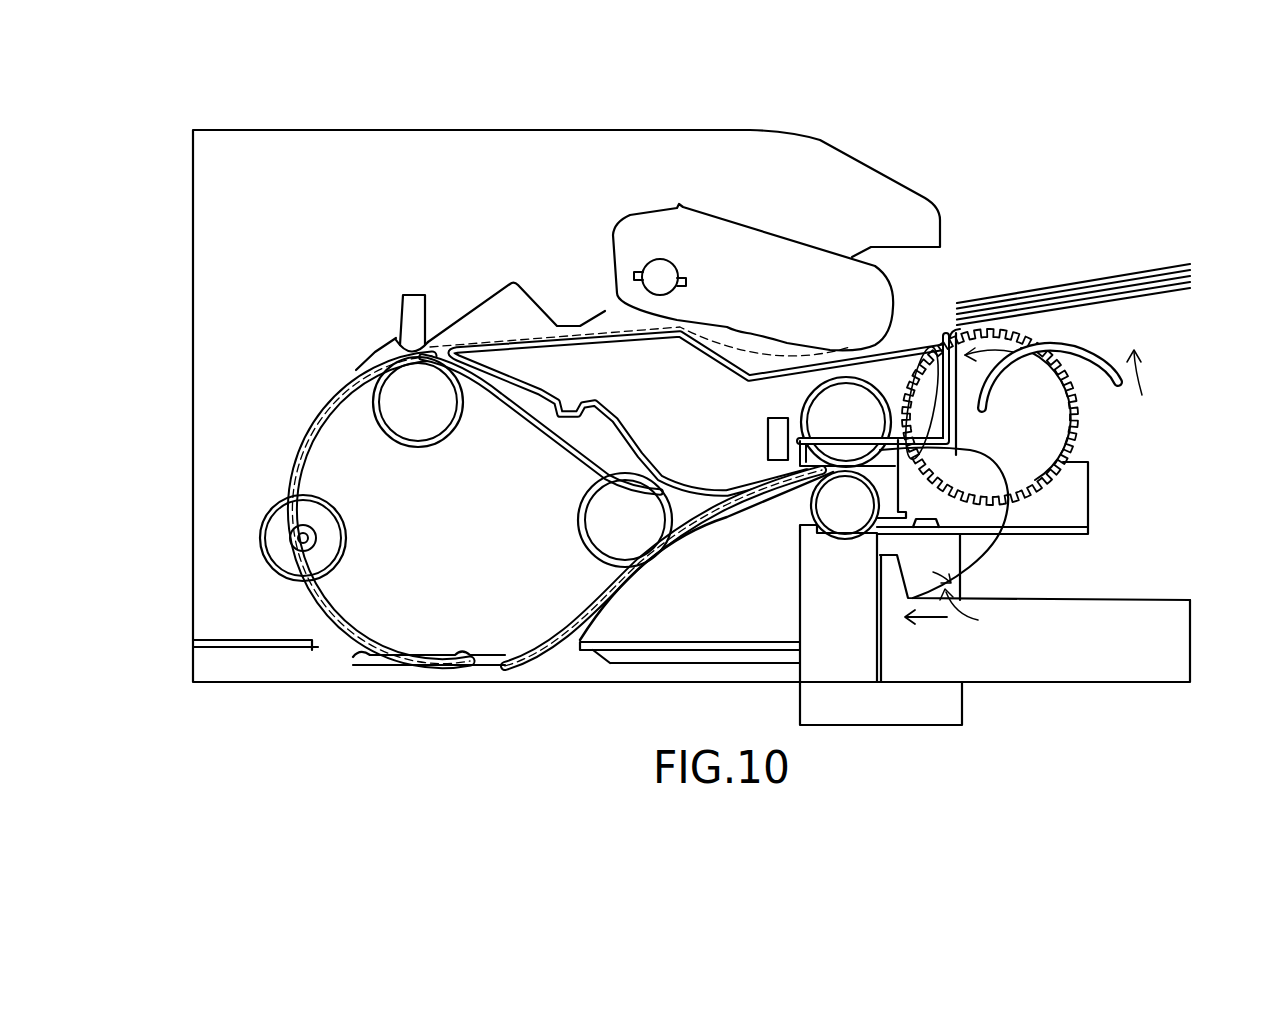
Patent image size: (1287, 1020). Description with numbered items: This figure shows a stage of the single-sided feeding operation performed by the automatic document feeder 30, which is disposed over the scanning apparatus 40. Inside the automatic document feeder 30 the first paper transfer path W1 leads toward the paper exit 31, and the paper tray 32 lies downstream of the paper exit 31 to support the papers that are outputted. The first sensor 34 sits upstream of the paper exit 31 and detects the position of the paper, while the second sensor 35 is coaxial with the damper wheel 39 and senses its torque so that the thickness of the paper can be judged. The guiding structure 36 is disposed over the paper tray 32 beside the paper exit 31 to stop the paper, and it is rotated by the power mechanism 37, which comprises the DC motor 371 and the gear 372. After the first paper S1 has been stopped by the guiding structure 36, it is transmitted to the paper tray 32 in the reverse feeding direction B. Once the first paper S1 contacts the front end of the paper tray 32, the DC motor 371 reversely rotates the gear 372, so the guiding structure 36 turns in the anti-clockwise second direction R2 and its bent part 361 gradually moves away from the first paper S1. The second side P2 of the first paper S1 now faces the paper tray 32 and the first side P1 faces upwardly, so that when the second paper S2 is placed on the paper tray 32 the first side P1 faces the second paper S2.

The automatic document feeder 30 is at (419, 117).
The paper exit 31 is at (940, 342).
The paper tray 32 is at (1177, 640).
The first sensor 34 is at (777, 440).
The second sensor 35 is at (318, 538).
The guiding structure 36 is at (1000, 378).
The bent part 361 is at (1100, 384).
The power mechanism 37 is at (1050, 520).
The DC motor 371 is at (952, 548).
The gear 372 is at (1030, 456).
The damper wheel 39 is at (327, 497).
The scanning apparatus 40 is at (282, 675).
The first paper transfer path W1 is at (514, 338).
The first paper S1 is at (755, 488).
The second paper S2 is at (1035, 298).
The second direction R2 is at (1153, 372).
The first side P1 is at (927, 566).
The second side P2 is at (976, 614).
The reverse feeding direction B is at (926, 631).